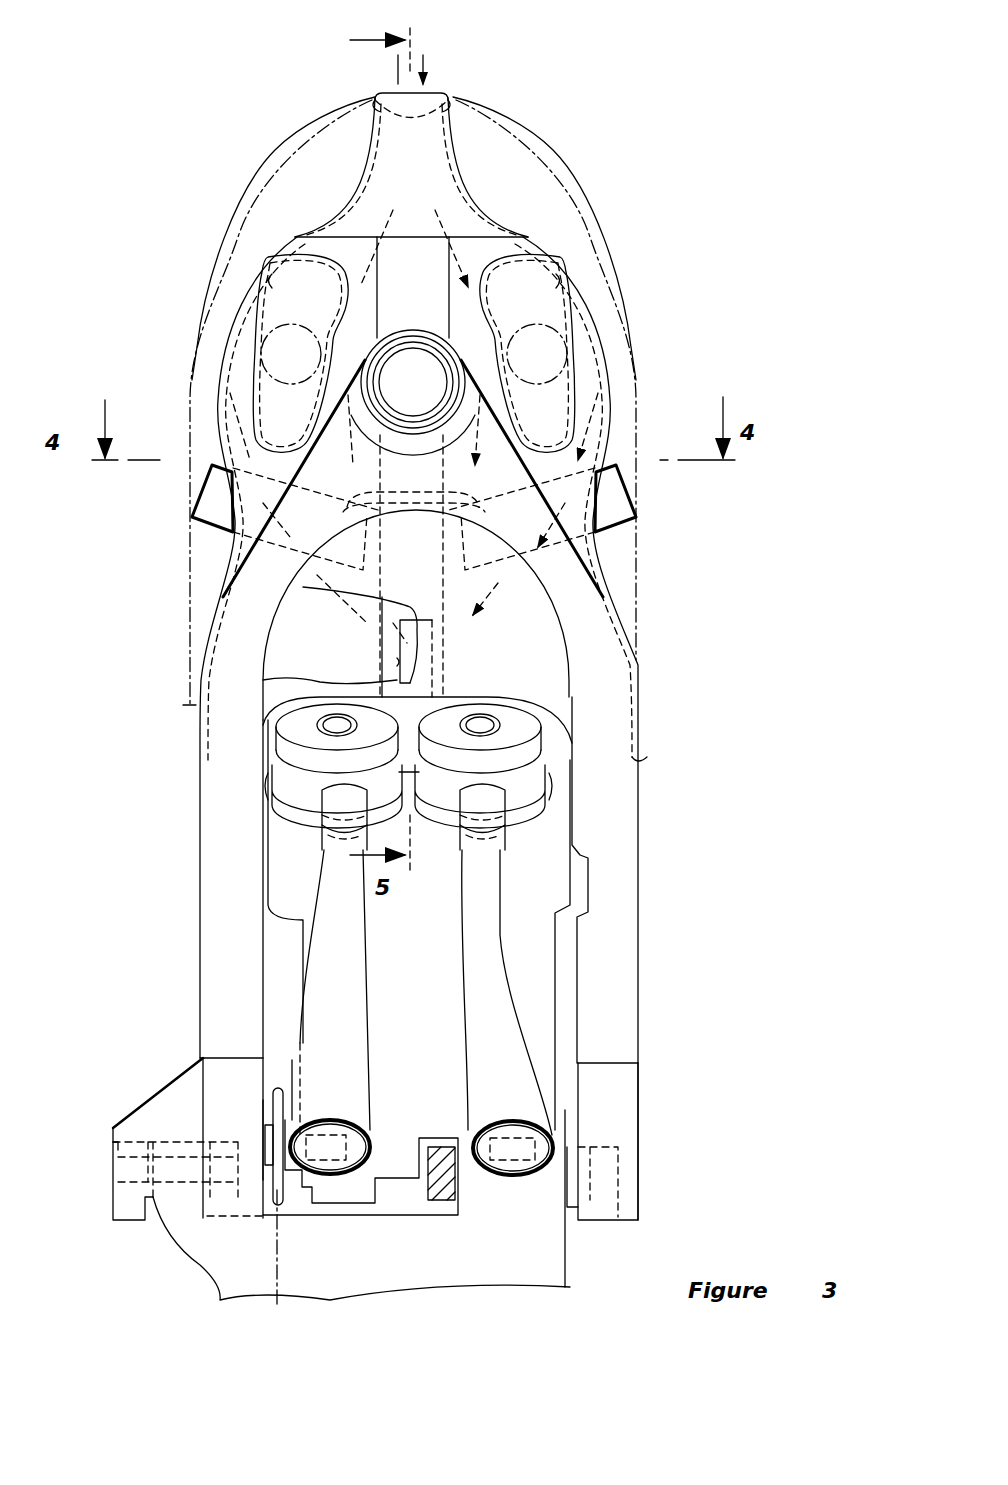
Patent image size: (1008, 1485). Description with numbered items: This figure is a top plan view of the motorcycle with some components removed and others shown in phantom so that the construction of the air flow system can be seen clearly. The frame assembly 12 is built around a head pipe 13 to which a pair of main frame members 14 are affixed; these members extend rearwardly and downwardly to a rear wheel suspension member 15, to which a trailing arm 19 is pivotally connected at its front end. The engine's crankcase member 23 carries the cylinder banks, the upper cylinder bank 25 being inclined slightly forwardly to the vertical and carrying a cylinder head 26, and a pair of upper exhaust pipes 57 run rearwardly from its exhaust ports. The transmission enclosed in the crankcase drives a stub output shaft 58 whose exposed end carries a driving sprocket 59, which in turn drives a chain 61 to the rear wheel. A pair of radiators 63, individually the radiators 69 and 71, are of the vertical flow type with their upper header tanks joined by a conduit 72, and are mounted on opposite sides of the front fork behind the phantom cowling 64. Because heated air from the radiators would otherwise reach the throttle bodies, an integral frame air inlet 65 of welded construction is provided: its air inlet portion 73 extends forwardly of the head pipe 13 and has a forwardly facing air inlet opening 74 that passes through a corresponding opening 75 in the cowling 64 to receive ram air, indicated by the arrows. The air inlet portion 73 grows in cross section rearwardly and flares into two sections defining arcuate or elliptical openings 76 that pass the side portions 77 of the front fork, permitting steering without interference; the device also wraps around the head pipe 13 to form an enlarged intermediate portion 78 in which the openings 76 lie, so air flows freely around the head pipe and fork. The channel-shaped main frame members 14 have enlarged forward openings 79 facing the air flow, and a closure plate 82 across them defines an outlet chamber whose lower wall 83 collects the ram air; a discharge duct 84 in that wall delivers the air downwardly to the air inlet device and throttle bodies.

The frame assembly 12 is at (705, 722).
The head pipe 13 is at (413, 335).
The main frame members 14 is at (202, 845).
The rear wheel suspension member 15 is at (648, 1120).
The trailing arm 19 is at (574, 1246).
The crankcase member 23 is at (560, 977).
The cylinder bank 25 is at (270, 783).
The cylinder head 26 is at (527, 732).
The upper exhaust pipes 57 is at (320, 887).
The stub output shaft 58 is at (330, 1120).
The driving sprocket 59 is at (283, 1117).
The chain 61 is at (280, 1268).
The radiators 63 is at (612, 458).
The cowling 64 is at (572, 172).
The frame air inlet 65 is at (670, 318).
The radiator 69 is at (625, 490).
The radiator 71 is at (205, 480).
The conduit 72 is at (414, 513).
The air inlet portion 73 is at (460, 159).
The air inlet opening 74 is at (375, 100).
The opening 75 is at (455, 98).
The openings 76 is at (272, 285).
The side portions 77 is at (266, 332).
The intermediate portion 78 is at (600, 300).
The openings 79 is at (222, 528).
The closure plate 82 is at (517, 607).
The lower wall 83 is at (292, 630).
The discharge duct 84 is at (397, 658).